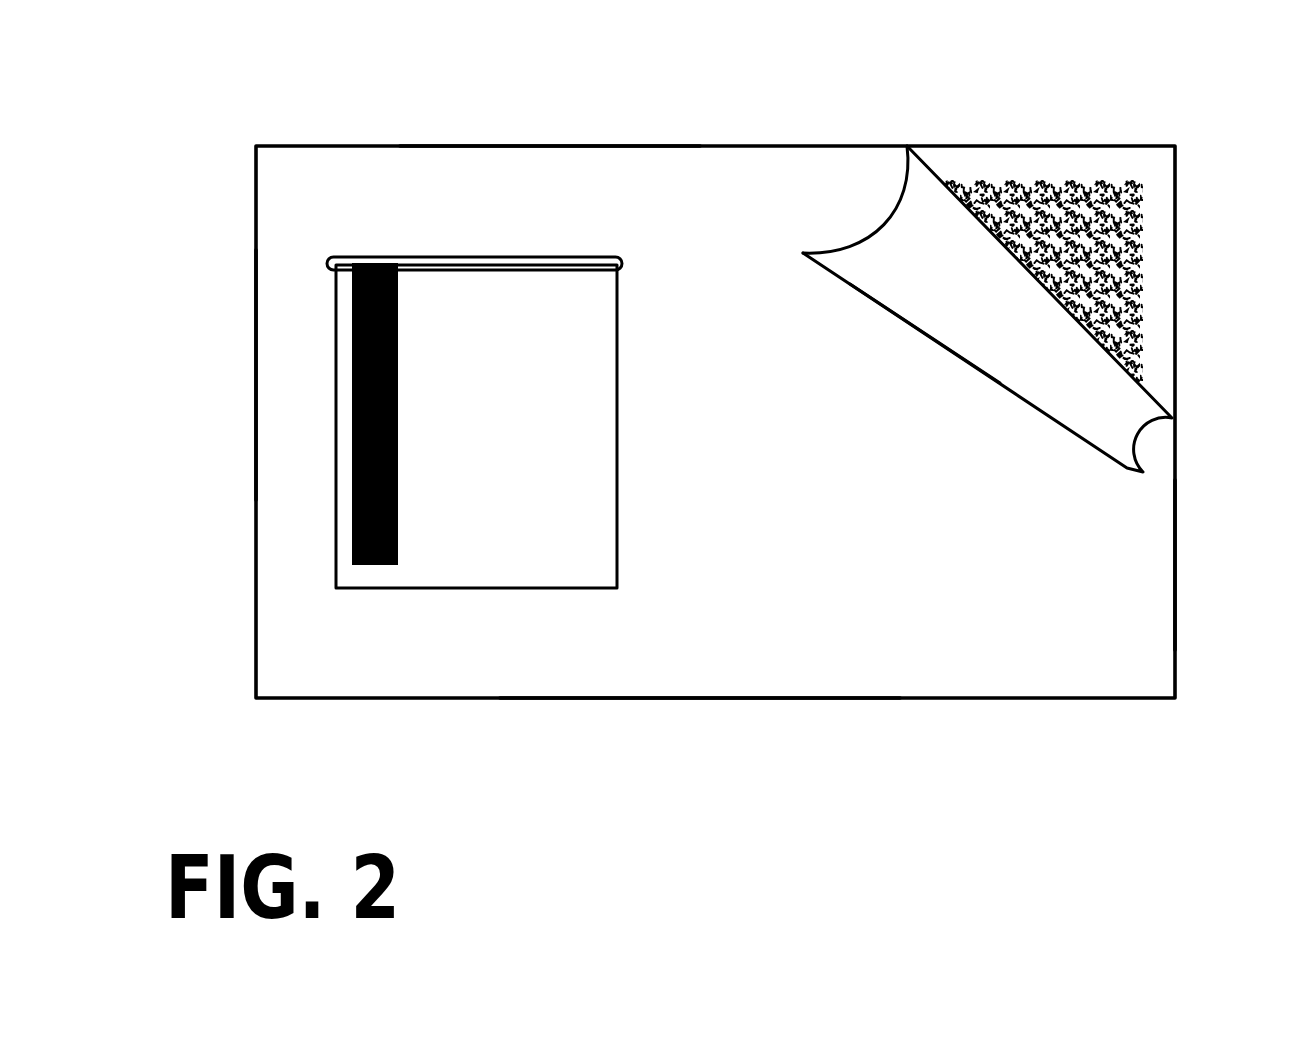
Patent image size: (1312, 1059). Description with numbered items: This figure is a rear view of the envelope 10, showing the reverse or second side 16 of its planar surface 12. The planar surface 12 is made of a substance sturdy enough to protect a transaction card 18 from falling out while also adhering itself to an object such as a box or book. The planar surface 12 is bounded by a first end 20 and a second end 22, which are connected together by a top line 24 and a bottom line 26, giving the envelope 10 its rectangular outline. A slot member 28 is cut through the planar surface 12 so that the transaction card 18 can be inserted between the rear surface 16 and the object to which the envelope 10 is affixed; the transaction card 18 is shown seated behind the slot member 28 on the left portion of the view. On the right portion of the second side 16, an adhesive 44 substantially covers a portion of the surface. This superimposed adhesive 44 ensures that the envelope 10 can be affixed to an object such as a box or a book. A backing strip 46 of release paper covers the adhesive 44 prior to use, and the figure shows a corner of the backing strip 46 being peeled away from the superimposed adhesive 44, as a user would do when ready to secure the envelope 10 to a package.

The envelope 10 is at (325, 100).
The planar surface 12 is at (712, 143).
The second side 16 is at (1158, 348).
The transaction card 18 is at (588, 473).
The first end 20 is at (256, 362).
The second end 22 is at (1175, 532).
The top line 24 is at (547, 146).
The bottom line 26 is at (678, 700).
The slot member 28 is at (620, 263).
The adhesive 44 is at (1143, 203).
The backing strip 46 is at (913, 300).